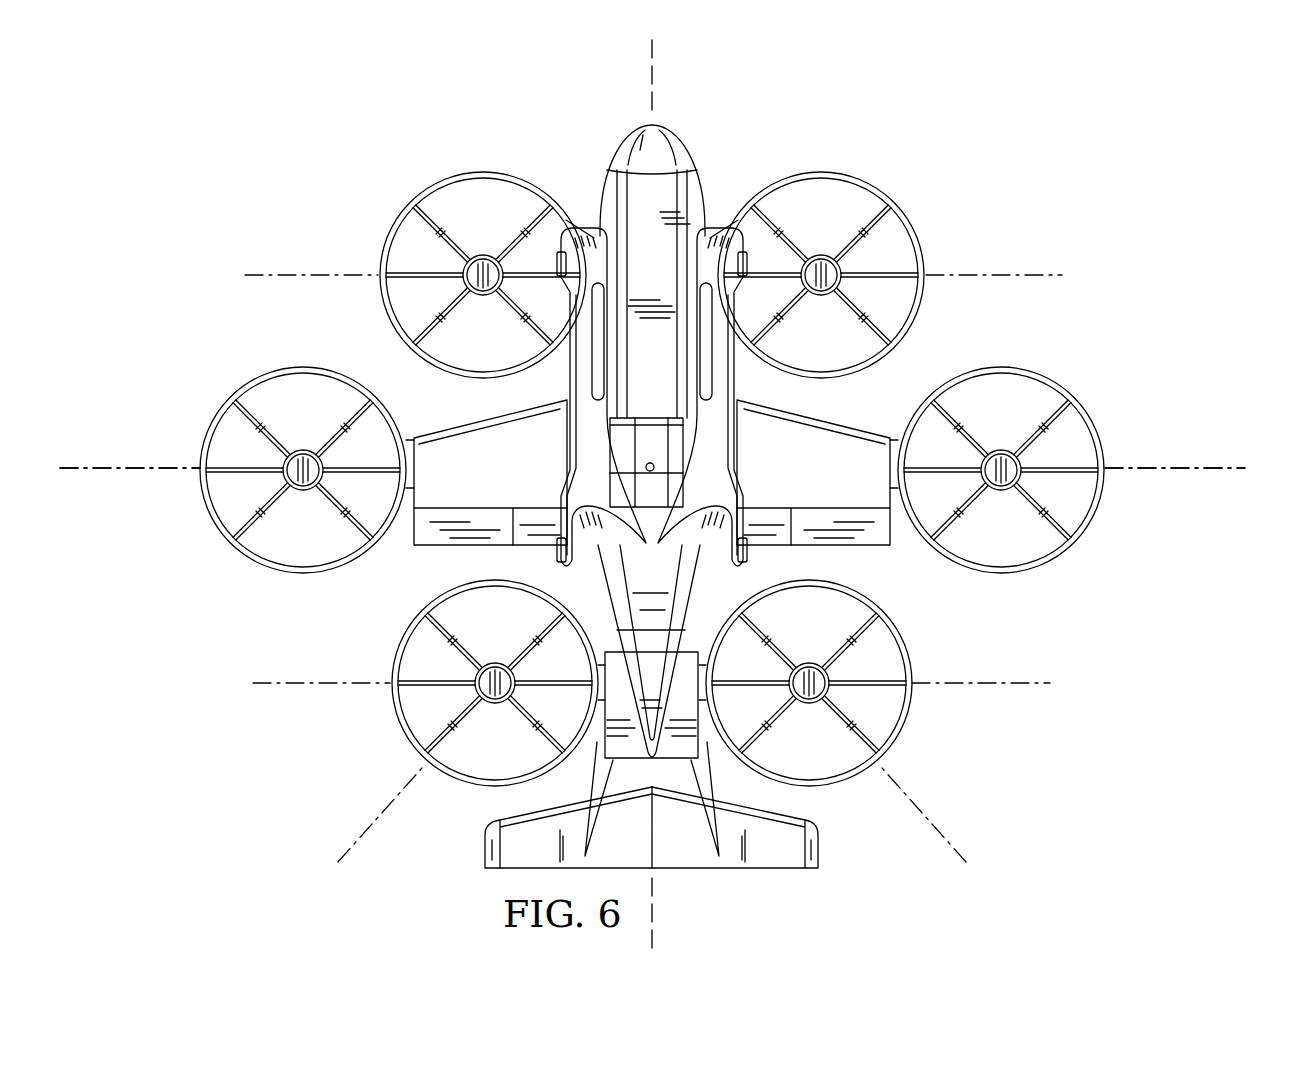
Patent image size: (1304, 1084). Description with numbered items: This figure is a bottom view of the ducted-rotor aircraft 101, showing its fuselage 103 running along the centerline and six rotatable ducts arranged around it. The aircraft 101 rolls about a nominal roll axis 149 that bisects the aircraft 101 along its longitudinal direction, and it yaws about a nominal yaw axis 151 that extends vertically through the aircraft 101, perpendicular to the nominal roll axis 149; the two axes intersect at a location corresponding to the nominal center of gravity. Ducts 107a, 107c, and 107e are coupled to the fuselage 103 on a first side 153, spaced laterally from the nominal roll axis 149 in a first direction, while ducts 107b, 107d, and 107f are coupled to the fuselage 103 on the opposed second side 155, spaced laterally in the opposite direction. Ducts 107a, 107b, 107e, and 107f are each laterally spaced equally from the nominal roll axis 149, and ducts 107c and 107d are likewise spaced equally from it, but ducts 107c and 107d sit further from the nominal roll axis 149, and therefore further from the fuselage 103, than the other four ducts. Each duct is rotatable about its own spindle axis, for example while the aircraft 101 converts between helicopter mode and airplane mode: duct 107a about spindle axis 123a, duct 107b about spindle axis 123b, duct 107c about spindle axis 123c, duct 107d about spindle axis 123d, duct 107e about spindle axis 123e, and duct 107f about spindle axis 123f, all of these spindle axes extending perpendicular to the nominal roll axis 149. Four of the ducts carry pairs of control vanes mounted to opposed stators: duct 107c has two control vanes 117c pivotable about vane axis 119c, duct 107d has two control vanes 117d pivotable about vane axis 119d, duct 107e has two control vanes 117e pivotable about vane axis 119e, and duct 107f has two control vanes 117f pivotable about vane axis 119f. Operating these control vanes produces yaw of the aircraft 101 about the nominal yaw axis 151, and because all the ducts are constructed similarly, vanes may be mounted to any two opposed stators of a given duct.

The ducted-rotor aircraft 101 is at (338, 98).
The fuselage 103 is at (651, 496).
The duct 107a is at (480, 172).
The duct 107b is at (824, 172).
The duct 107c is at (282, 442).
The duct 107d is at (1026, 442).
The duct 107e is at (458, 696).
The duct 107f is at (845, 696).
The control vanes 117c is at (358, 458).
The control vanes 117d is at (946, 458).
The control vanes 117e is at (523, 642).
The control vanes 117f is at (781, 642).
The vane axis 119c is at (82, 478).
The vane axis 119d is at (1224, 478).
The vane axis 119e is at (340, 838).
The vane axis 119f is at (964, 838).
The spindle axis 123a is at (268, 272).
The spindle axis 123b is at (1036, 272).
The spindle axis 123c is at (96, 466).
The spindle axis 123d is at (1209, 466).
The spindle axis 123e is at (282, 690).
The spindle axis 123f is at (1022, 690).
The nominal roll axis 149 is at (655, 934).
The nominal yaw axis 151 is at (654, 462).
The first side 153 is at (536, 87).
The second side 155 is at (811, 87).